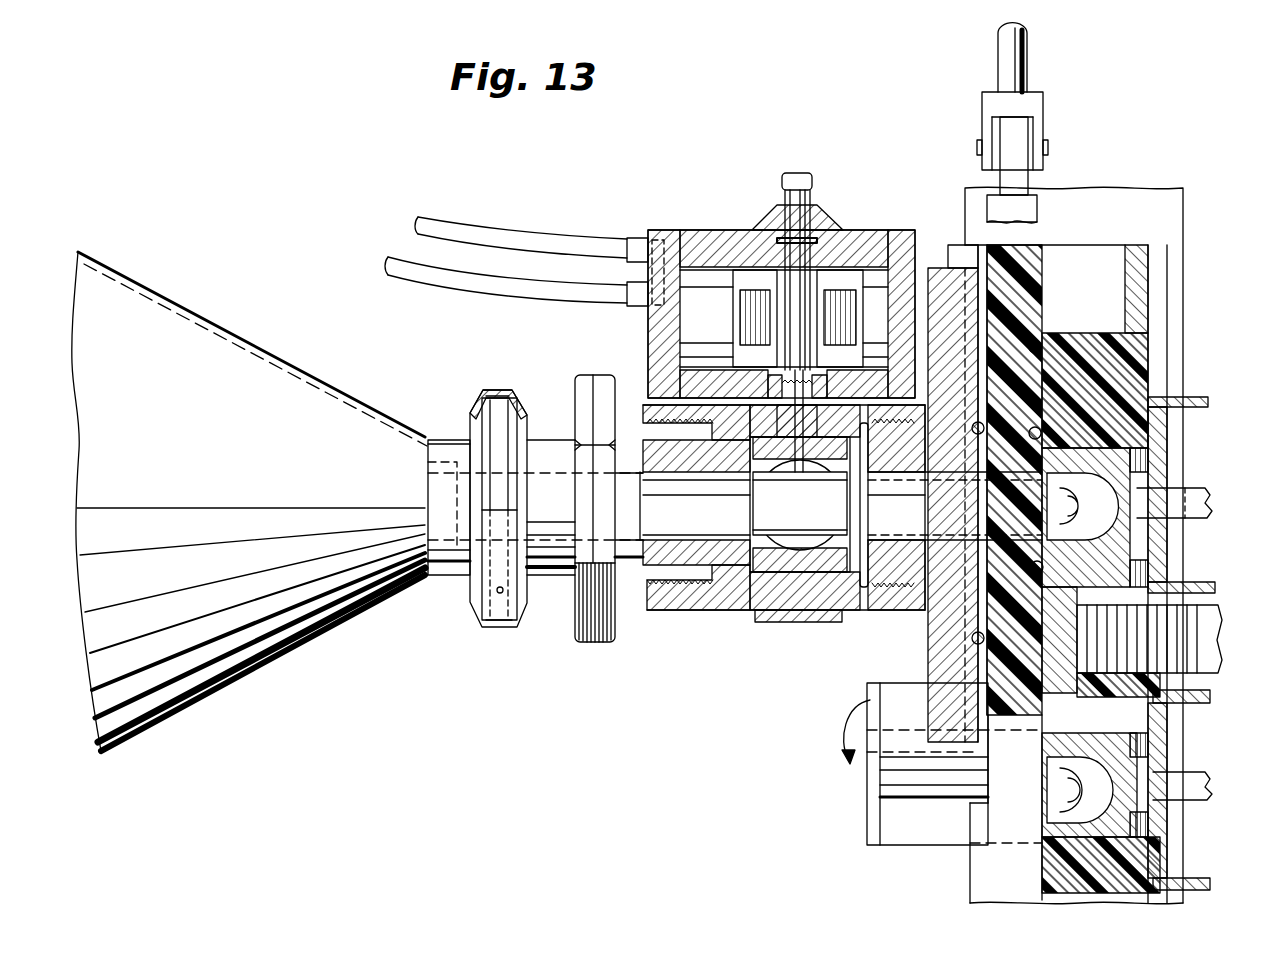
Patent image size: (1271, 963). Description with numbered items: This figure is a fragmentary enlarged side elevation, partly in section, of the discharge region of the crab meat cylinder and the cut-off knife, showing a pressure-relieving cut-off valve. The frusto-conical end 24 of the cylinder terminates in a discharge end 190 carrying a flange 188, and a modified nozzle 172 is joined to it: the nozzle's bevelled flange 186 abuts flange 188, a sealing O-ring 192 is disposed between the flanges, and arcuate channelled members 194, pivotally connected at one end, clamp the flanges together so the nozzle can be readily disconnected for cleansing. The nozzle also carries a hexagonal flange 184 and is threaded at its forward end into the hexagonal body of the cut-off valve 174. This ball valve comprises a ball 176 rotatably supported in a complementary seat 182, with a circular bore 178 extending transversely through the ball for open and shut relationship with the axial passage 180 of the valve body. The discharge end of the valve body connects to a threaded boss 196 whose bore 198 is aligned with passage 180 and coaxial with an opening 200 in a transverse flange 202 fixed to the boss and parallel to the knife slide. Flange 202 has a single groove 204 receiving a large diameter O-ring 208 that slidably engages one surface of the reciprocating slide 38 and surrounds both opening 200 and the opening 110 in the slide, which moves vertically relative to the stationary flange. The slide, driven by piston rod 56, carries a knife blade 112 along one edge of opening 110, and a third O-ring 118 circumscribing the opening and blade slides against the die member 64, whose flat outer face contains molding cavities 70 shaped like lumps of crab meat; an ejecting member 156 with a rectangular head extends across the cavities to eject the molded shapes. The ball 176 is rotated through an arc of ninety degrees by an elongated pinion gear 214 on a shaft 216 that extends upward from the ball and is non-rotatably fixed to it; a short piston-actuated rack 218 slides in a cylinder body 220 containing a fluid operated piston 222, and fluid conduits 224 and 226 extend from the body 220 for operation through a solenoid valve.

The opposite end of the cylinder 24 is at (182, 338).
The slide 38 is at (1042, 202).
The piston rod 56 is at (1030, 72).
The die member 64 is at (1140, 343).
The molding cavities 70 is at (1070, 513).
The opening 110 is at (1020, 530).
The knife blade 112 is at (1080, 493).
The third O-ring 118 is at (1038, 342).
The ejecting member 156 is at (1123, 757).
The modified nozzle 172 is at (543, 438).
The cut-off valve 174 is at (850, 610).
The ball 176 is at (800, 622).
The circular bore 178 is at (834, 497).
The axial passage 180 is at (683, 610).
The seat 182 is at (738, 610).
The flange 184 is at (600, 642).
The bevelled flange 186 is at (517, 489).
The flange 188 is at (472, 428).
The discharge end 190 is at (438, 490).
The sealing O-ring 192 is at (500, 390).
The arcuate channelled members 194 is at (478, 396).
The threaded boss 196 is at (910, 610).
The bore 198 is at (910, 530).
The opening 200 is at (955, 475).
The transverse flange 202 is at (942, 268).
The groove 204 is at (982, 425).
The large diameter O-ring 208 is at (1036, 433).
The elongated pinion gear 214 is at (815, 195).
The shaft 216 is at (650, 395).
The piston-actuated rack 218 is at (822, 307).
The cylinder body 220 is at (740, 228).
The fluid operated piston 222 is at (733, 307).
The fluid conduit 224 is at (470, 232).
The fluid conduit 226 is at (445, 284).